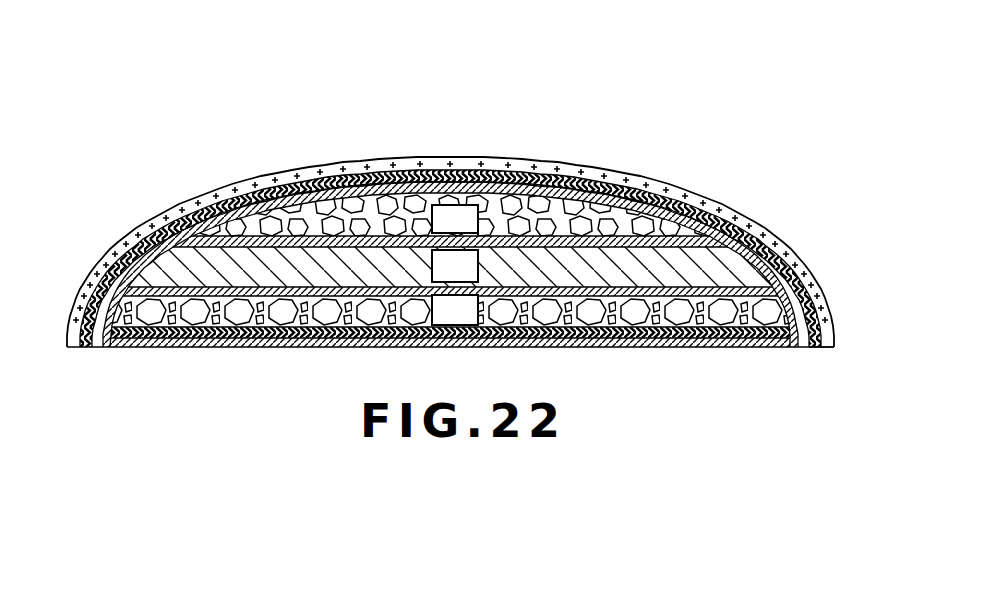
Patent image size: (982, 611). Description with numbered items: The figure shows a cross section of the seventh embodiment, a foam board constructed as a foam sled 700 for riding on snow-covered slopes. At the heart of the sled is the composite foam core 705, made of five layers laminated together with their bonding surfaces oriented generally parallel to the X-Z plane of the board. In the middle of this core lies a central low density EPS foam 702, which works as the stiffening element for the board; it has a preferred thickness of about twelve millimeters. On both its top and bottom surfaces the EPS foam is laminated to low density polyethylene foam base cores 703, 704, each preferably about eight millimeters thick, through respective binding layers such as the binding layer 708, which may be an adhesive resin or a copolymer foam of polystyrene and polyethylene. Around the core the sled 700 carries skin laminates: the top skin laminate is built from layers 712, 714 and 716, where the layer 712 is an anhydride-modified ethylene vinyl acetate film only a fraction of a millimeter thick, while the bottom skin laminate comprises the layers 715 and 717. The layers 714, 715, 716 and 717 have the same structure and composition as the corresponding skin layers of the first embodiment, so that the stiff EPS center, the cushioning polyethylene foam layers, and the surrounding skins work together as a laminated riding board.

The foam sled 700 is at (312, 96).
The central low density EPS foam 702 is at (188, 268).
The low density polyethylene foam base core 703 is at (93, 287).
The low density polyethylene foam base core 704 is at (255, 226).
The composite foam core 705 is at (212, 80).
The binding layer 708 is at (400, 257).
The top skin laminate layer 712 is at (611, 203).
The top skin laminate layer 714 is at (518, 177).
The bottom skin laminate layer 715 is at (830, 333).
The top skin laminate layer 716 is at (462, 163).
The bottom skin laminate layer 717 is at (737, 348).